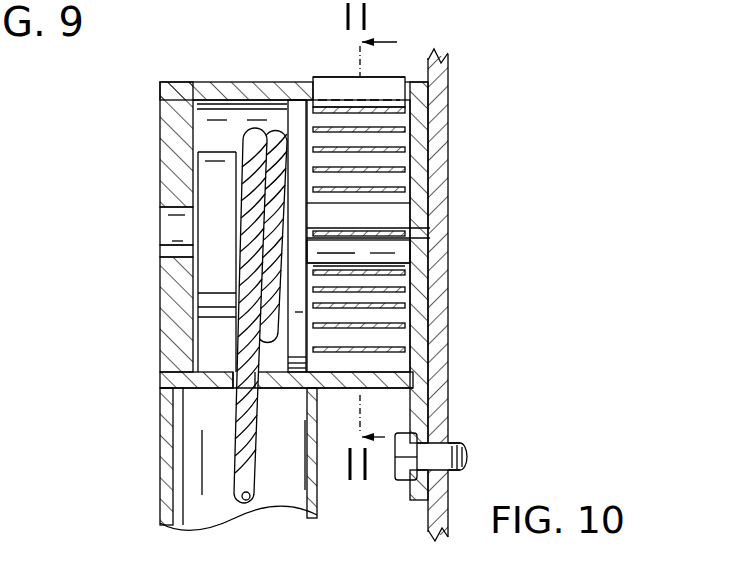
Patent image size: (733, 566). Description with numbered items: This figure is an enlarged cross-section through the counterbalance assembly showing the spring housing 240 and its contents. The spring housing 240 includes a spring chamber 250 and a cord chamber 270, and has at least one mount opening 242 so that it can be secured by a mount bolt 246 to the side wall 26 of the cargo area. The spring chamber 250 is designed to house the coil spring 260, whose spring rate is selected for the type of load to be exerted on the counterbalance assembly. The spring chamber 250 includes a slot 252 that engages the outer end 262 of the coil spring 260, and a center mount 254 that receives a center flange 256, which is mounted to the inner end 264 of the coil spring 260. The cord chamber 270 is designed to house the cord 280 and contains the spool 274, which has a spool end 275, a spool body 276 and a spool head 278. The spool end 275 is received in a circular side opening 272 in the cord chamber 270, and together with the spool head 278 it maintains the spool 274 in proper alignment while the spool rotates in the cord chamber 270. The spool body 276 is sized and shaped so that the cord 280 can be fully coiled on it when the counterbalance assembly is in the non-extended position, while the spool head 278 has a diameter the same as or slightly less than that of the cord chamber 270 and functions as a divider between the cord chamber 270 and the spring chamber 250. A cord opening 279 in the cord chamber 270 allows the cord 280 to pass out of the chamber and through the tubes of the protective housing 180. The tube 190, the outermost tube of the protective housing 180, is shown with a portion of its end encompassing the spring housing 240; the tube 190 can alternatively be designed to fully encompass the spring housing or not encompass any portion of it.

The side wall 26 is at (430, 515).
The protective housing 180 is at (140, 484).
The tube 190 is at (160, 443).
The spring housing 240 is at (160, 162).
The mount opening 242 is at (417, 470).
The mount bolt 246 is at (465, 453).
The spring chamber 250 is at (397, 177).
The slot 252 is at (327, 100).
The center mount 254 is at (415, 212).
The center flange 256 is at (403, 247).
The coil spring 260 is at (410, 146).
The outer end of coil spring 262 is at (397, 76).
The inner end of coil spring 264 is at (370, 238).
The cord chamber 270 is at (222, 113).
The circular side opening 272 is at (157, 248).
The spool 274 is at (204, 185).
The spool end 275 is at (160, 225).
The spool body 276 is at (213, 148).
The spool head 278 is at (300, 117).
The cord opening 279 is at (227, 392).
The cord 280 is at (230, 335).